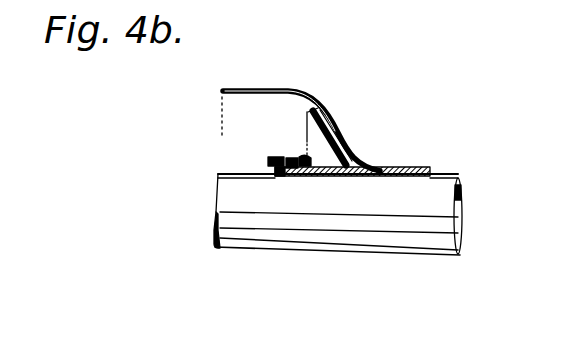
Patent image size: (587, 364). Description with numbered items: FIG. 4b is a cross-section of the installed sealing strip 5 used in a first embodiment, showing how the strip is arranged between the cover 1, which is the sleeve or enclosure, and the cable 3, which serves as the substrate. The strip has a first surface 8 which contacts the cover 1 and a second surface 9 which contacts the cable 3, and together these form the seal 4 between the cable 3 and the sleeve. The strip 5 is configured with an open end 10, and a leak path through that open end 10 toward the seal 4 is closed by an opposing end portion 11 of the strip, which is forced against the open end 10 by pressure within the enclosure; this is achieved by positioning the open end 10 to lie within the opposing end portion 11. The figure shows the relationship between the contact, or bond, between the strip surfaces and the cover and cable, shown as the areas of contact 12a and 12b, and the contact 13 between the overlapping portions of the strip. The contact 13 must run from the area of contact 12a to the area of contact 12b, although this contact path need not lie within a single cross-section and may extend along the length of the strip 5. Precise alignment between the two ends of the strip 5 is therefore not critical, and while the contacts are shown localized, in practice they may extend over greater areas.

The cover 1 is at (276, 90).
The cable 3 is at (458, 192).
The seal 4 is at (421, 171).
The sealing strip 5 is at (322, 110).
The first surface 8 is at (305, 127).
The second surface 9 is at (281, 177).
The open end 10 is at (268, 160).
The opposing end portion 11 is at (311, 158).
The area of contact 12a is at (339, 139).
The area of contact 12b is at (308, 178).
The contact between overlapping portions 13 is at (351, 167).